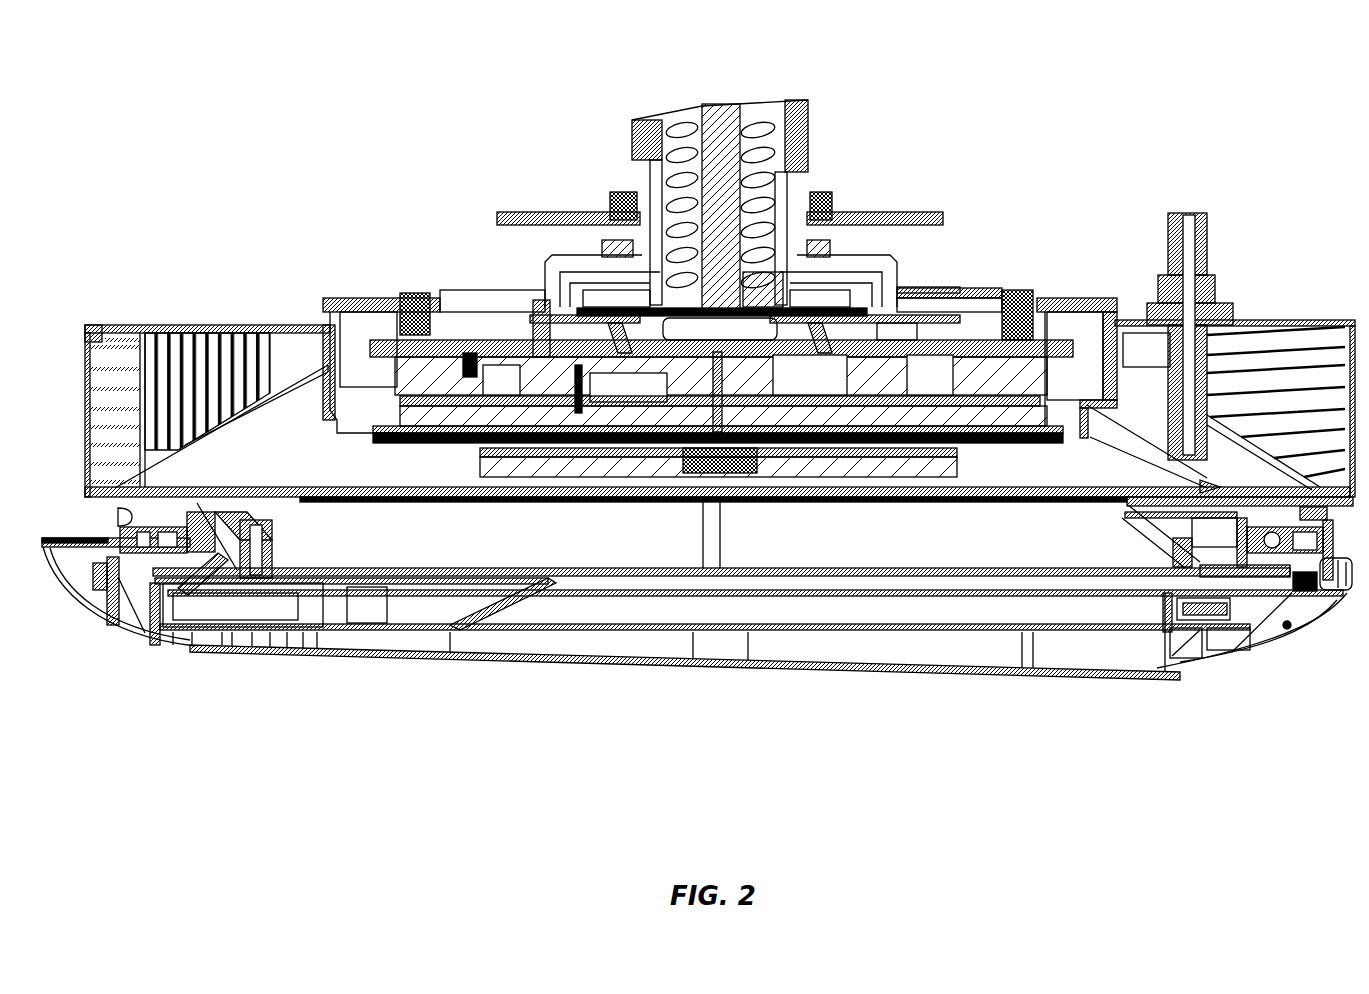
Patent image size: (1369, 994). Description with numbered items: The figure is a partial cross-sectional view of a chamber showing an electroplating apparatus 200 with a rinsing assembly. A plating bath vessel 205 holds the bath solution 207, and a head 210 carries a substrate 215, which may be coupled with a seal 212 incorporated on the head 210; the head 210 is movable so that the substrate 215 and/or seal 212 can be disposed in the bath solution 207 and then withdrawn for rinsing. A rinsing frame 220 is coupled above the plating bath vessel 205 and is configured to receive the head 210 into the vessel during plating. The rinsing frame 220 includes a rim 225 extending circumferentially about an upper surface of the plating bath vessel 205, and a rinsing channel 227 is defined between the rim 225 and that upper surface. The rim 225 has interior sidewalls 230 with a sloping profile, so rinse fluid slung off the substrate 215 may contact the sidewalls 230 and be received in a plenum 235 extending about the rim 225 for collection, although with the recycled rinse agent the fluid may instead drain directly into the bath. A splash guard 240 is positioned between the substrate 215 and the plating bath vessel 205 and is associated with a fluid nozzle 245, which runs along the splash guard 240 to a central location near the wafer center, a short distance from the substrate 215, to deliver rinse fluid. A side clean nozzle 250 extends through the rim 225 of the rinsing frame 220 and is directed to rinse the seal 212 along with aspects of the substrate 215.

The electroplating apparatus 200 is at (328, 103).
The plating bath vessel 205 is at (470, 628).
The bath solution 207 is at (670, 593).
The head 210 is at (808, 145).
The seal 212 is at (333, 420).
The substrate 215 is at (948, 447).
The rinsing frame 220 is at (117, 327).
The rim 225 is at (213, 325).
The rinsing channel 227 is at (267, 412).
The interior sidewalls 230 is at (218, 420).
The plenum 235 is at (205, 517).
The splash guard 240 is at (805, 478).
The fluid nozzle 245 is at (717, 470).
The side clean nozzle 250 is at (1208, 242).